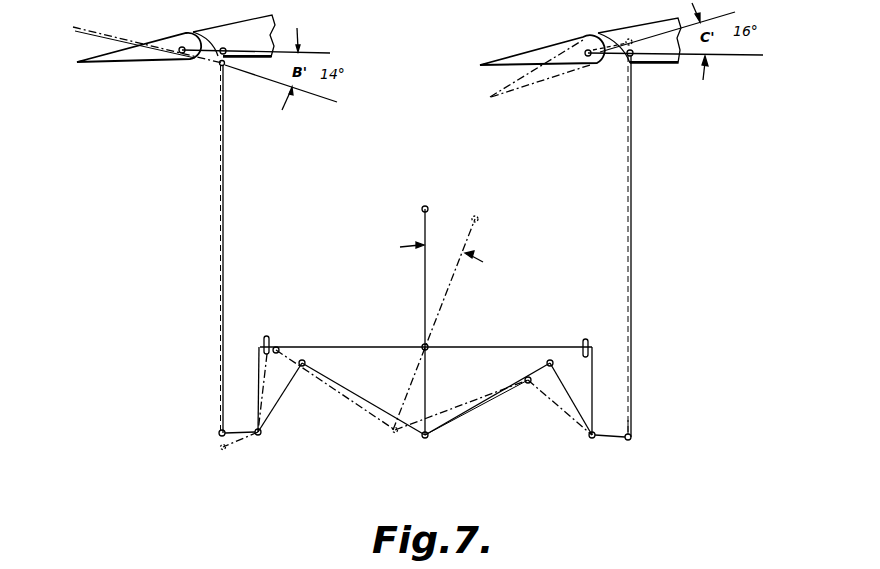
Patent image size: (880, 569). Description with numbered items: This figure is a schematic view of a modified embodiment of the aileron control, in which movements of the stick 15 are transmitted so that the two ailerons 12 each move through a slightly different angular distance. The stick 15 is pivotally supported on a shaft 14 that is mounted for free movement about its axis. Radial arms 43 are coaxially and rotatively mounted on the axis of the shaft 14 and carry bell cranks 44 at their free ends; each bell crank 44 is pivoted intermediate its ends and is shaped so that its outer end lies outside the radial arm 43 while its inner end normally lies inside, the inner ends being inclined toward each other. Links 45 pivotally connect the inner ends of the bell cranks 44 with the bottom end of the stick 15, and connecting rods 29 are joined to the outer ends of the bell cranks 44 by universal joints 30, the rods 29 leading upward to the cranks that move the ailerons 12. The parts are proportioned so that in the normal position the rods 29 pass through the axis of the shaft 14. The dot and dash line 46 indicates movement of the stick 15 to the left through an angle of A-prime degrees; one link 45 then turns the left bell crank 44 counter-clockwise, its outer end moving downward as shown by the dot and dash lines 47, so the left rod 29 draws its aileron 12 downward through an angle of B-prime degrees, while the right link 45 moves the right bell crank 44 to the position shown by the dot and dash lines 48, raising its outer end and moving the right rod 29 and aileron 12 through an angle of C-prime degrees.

The aileron 12 is at (157, 43).
The shaft 14 is at (295, 348).
The stick 15 is at (427, 393).
The connecting rod 29 is at (222, 246).
The universal joint 30 is at (219, 435).
The radial arm 43 is at (259, 386).
The bell crank 44 is at (273, 408).
The link 45 is at (337, 387).
The dot and dash line 46 is at (415, 385).
The dot and dash lines 47 is at (232, 447).
The dot and dash lines 48 is at (627, 425).